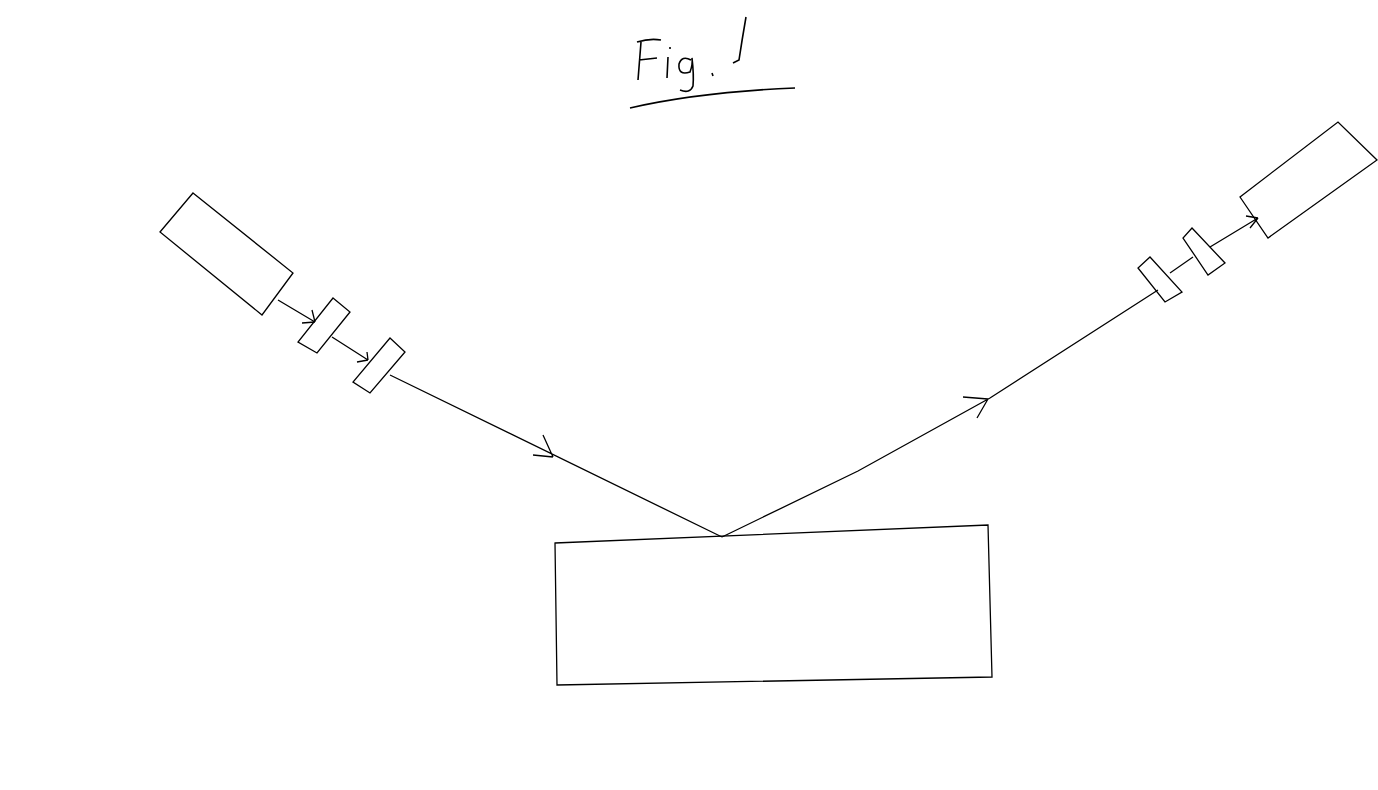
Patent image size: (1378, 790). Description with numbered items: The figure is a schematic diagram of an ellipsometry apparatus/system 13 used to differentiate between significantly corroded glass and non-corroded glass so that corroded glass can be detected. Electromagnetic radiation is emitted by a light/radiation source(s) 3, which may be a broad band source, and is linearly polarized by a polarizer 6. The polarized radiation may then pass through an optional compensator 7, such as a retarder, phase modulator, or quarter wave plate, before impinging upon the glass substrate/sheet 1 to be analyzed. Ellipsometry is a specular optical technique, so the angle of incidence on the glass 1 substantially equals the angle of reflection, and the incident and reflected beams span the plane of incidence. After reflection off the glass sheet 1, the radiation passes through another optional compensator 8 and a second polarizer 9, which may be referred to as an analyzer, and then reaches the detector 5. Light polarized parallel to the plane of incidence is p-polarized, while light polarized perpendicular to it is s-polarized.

The glass substrate/sheet 1 is at (923, 660).
The light/radiation source 3 is at (217, 200).
The detector 5 is at (1290, 162).
The polarizer 6 is at (340, 297).
The compensator 7 is at (393, 340).
The compensator 8 is at (1150, 258).
The polarizer (analyzer) 9 is at (1192, 228).
The ellipsometry apparatus/system 13 is at (985, 117).